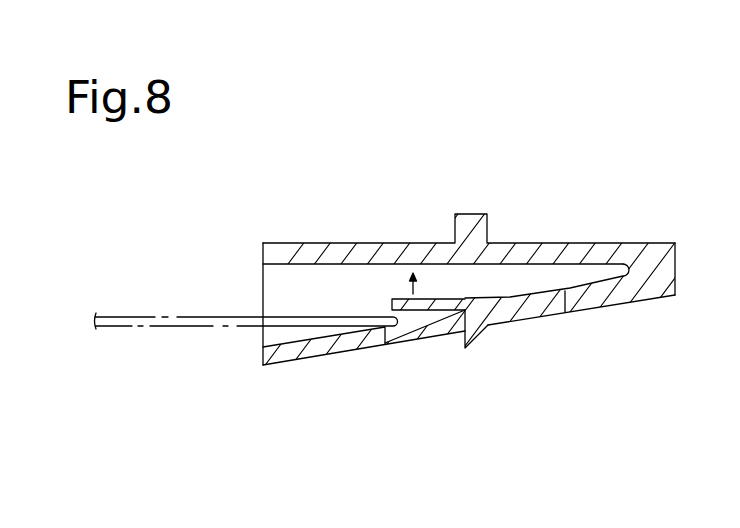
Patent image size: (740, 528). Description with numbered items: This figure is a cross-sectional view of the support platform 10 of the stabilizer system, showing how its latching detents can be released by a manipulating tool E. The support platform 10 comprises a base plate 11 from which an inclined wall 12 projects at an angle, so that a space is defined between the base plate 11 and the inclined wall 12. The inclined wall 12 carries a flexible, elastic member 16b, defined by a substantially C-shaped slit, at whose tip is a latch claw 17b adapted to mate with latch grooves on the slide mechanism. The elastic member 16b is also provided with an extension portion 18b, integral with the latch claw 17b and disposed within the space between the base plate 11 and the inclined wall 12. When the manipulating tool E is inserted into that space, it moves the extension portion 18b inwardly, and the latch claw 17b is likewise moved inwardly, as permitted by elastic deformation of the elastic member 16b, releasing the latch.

The support platform 10 is at (563, 243).
The base plate 11 is at (391, 253).
The inclined wall 12 is at (317, 355).
The elastic member 16b is at (497, 325).
The latch claw 17b is at (475, 351).
The extension portion 18b is at (415, 299).
The manipulating tool E is at (177, 328).